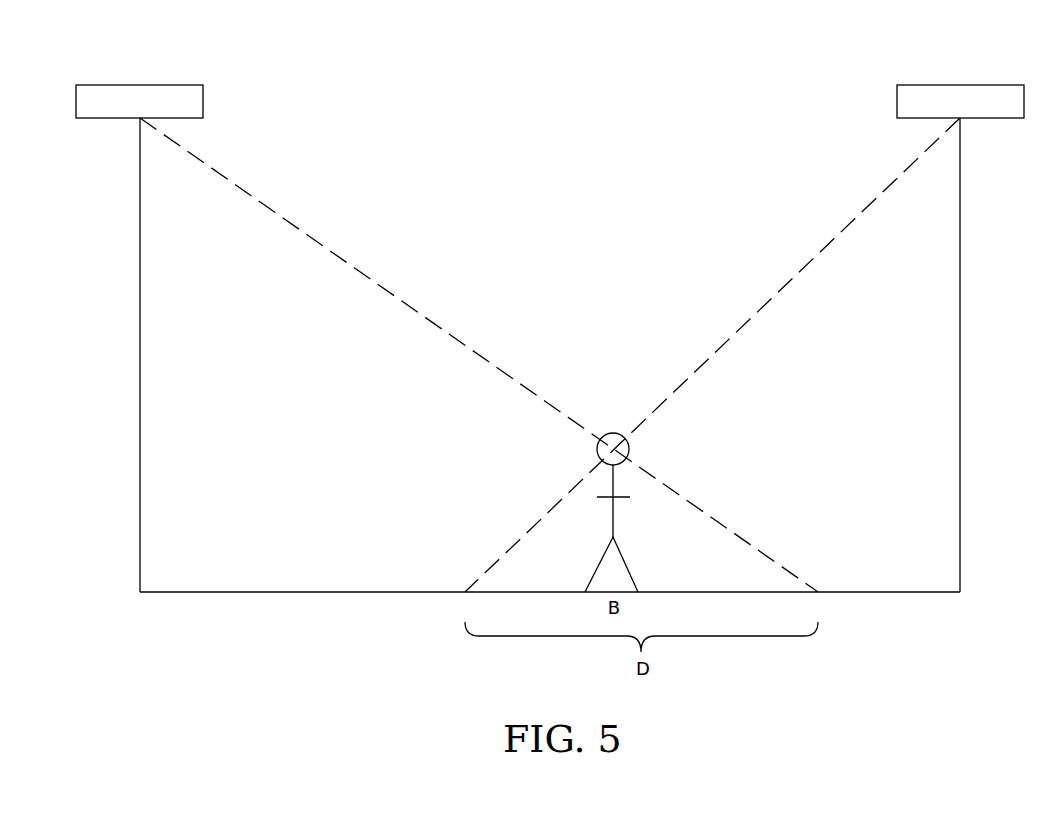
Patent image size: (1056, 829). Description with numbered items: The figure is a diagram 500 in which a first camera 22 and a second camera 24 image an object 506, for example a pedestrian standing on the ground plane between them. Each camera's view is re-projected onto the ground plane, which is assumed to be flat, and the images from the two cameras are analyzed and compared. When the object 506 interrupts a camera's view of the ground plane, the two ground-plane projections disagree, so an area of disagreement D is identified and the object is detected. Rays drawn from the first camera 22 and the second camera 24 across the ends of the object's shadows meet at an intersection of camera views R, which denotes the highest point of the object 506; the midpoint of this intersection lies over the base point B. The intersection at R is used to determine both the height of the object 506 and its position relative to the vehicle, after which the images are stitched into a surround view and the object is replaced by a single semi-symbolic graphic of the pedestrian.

The diagram 500 is at (370, 67).
The first camera 22 is at (108, 84).
The second camera 24 is at (945, 84).
The object 506 is at (613, 527).